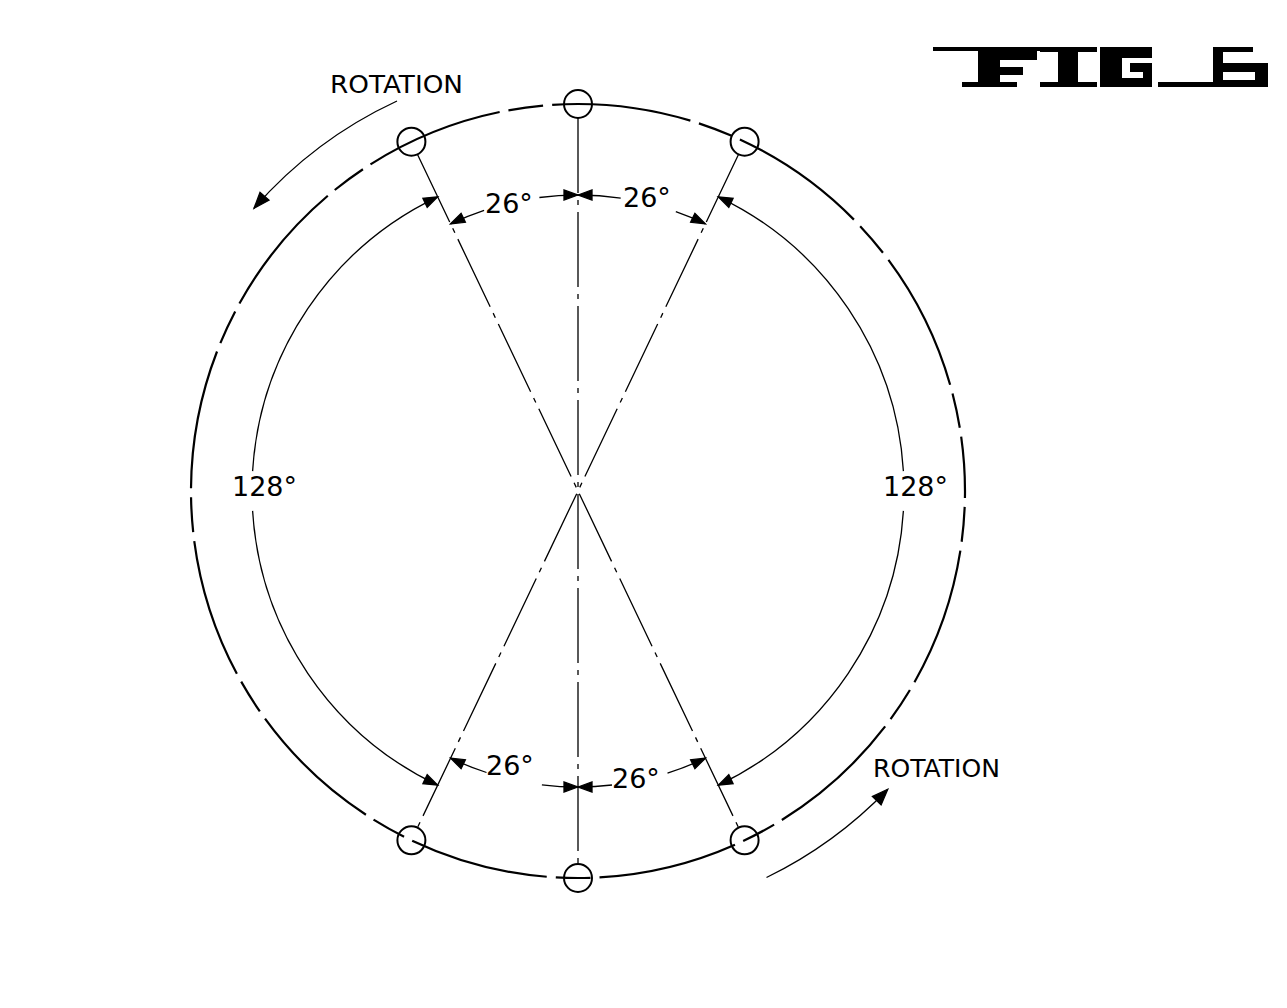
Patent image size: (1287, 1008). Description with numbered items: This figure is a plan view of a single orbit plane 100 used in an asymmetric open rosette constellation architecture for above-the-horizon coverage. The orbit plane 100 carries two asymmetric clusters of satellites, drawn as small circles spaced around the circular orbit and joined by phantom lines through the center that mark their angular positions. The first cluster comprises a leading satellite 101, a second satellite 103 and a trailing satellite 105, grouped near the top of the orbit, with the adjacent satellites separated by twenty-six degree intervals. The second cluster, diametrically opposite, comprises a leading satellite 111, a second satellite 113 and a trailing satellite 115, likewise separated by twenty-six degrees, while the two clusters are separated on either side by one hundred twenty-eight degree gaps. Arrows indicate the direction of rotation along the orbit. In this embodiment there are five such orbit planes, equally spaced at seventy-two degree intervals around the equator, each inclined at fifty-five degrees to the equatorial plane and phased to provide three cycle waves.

The orbit plane 100 is at (947, 305).
The leading satellite 101 is at (425, 148).
The second satellite 103 is at (587, 116).
The trailing satellite 105 is at (756, 133).
The leading satellite 111 is at (739, 853).
The second satellite 113 is at (574, 892).
The trailing satellite 115 is at (400, 849).